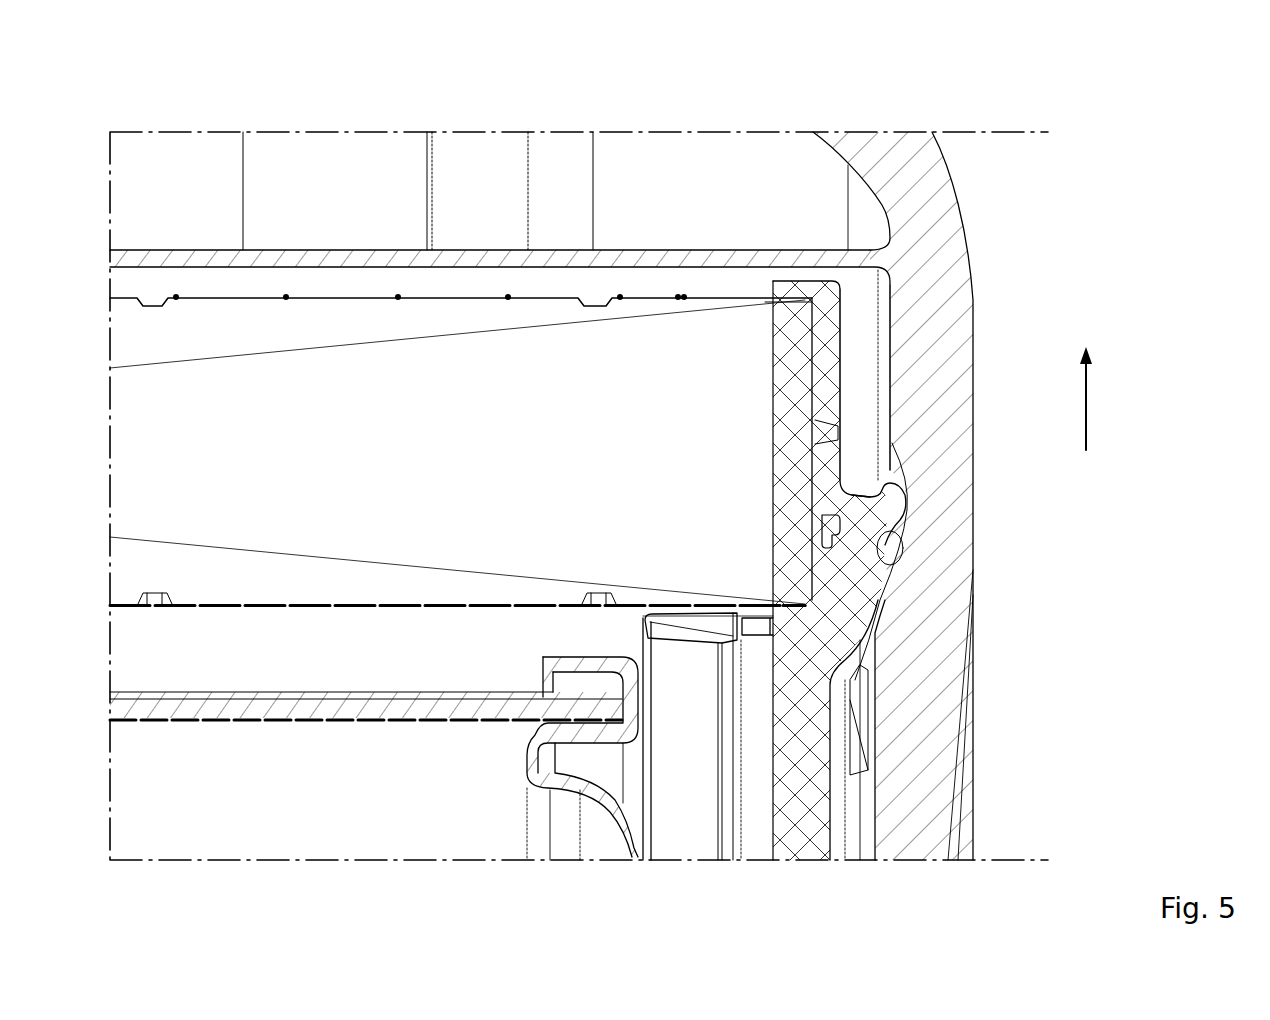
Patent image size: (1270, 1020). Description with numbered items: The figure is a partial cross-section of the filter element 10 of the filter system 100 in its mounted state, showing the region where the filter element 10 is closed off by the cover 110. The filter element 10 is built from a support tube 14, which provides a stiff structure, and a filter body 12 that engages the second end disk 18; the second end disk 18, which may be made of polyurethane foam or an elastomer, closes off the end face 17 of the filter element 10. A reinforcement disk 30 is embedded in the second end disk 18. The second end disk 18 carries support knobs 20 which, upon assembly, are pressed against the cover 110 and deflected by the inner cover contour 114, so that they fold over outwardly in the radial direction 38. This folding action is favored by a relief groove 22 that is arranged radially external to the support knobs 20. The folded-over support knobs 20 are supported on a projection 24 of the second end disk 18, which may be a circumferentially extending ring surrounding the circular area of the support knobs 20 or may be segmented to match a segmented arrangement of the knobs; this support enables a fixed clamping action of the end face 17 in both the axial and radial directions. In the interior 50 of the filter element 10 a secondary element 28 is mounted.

The filter system 100 is at (1128, 171).
The cover 110 is at (975, 231).
The filter element 10 is at (557, 285).
The filter body 12 is at (357, 471).
The support tube 14 is at (484, 604).
The end face 17 is at (840, 350).
The second end disk 18 is at (855, 386).
The support knobs 20 is at (896, 513).
The relief groove 22 is at (822, 540).
The projection 24 is at (878, 492).
The secondary element 28 is at (345, 705).
The reinforcement disk 30 is at (788, 410).
The radial direction 38 is at (1088, 403).
The interior 50 is at (238, 834).
The inner cover contour 114 is at (902, 587).